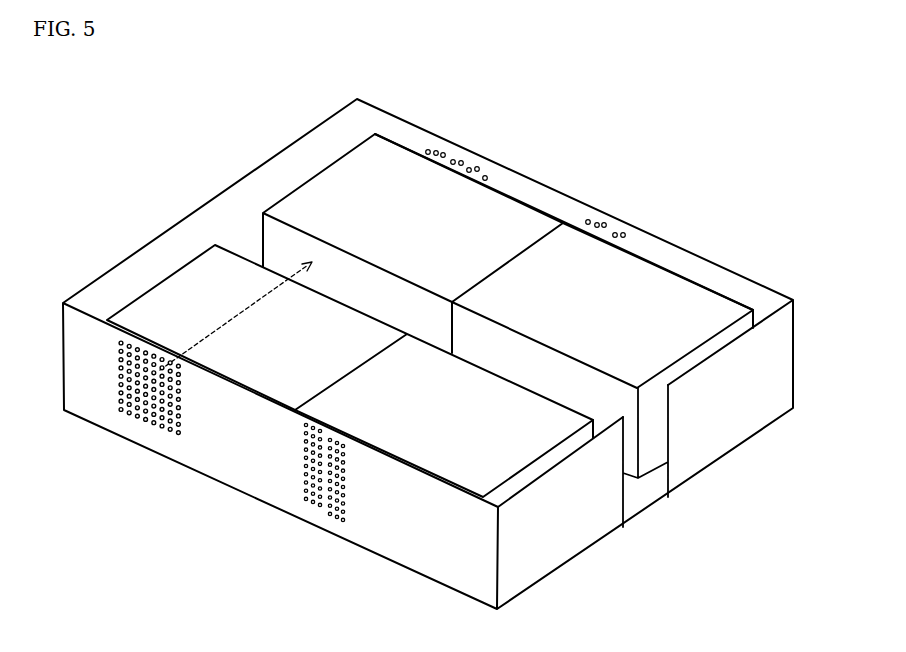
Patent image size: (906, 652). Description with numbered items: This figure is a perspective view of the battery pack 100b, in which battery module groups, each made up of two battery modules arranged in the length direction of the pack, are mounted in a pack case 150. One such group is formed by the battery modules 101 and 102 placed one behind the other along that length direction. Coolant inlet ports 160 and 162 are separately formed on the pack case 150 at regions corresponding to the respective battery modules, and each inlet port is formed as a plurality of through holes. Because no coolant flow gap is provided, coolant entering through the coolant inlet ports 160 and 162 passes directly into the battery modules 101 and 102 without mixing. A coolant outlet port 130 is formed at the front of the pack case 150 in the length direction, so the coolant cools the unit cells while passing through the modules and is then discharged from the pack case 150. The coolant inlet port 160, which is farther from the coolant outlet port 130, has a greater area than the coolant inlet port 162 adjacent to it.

The battery pack 100b is at (113, 137).
The battery module 101 is at (220, 308).
The battery module 102 is at (445, 416).
The coolant outlet port 130 is at (651, 502).
The pack case 150 is at (517, 172).
The coolant inlet port 160 is at (120, 417).
The coolant inlet port 162 is at (310, 512).